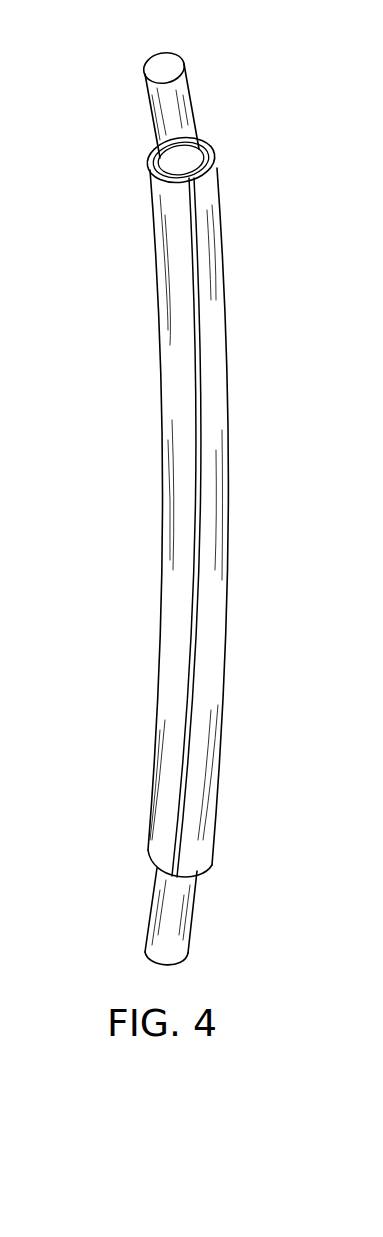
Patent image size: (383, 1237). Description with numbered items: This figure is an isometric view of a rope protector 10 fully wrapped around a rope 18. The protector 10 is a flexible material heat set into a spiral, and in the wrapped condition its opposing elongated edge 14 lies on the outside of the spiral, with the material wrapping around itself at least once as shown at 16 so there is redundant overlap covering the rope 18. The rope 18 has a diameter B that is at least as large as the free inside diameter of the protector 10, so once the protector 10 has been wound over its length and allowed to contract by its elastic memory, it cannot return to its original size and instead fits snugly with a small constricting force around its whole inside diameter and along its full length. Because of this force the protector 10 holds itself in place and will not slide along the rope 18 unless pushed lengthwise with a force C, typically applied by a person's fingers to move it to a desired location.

The protector 10 is at (165, 413).
The opposing elongated edge 14 is at (190, 670).
The wrap-around overlap 16 is at (211, 151).
The rope 18 is at (150, 910).
The rope diameter B is at (147, 74).
The force C is at (118, 177).